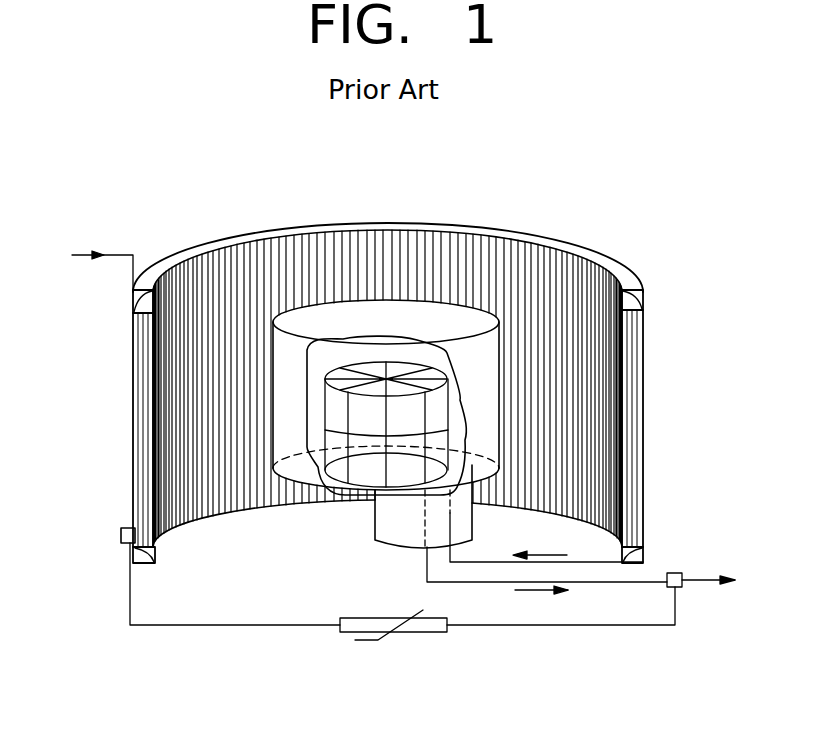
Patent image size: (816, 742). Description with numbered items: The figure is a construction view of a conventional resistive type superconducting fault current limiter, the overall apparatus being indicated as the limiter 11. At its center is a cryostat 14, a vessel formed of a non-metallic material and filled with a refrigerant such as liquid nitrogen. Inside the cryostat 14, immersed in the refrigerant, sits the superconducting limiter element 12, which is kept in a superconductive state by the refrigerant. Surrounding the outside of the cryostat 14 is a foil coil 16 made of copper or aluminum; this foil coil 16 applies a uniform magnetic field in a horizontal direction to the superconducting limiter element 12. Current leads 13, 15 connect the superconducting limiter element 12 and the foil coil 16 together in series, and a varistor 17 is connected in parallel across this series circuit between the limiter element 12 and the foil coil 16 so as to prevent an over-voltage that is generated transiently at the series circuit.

The reactor vessel 11 is at (268, 214).
The superconducting limiter element 12 is at (345, 484).
The current lead 13 is at (473, 518).
The cryostat 14 is at (380, 303).
The current lead 15 is at (425, 517).
The foil coil 16 is at (632, 354).
The varistor 17 is at (438, 633).